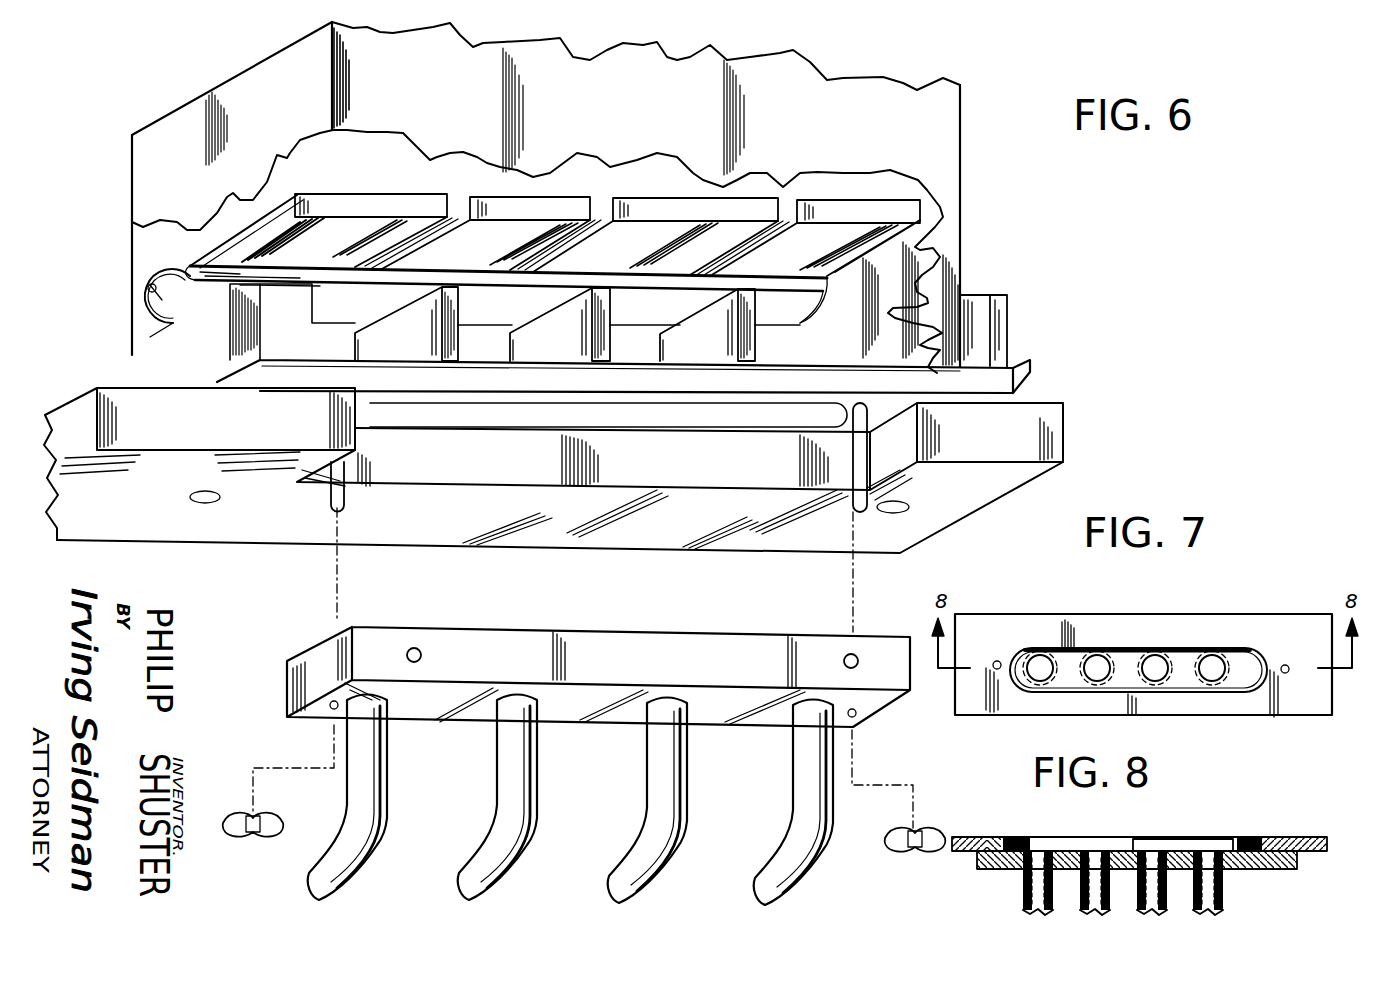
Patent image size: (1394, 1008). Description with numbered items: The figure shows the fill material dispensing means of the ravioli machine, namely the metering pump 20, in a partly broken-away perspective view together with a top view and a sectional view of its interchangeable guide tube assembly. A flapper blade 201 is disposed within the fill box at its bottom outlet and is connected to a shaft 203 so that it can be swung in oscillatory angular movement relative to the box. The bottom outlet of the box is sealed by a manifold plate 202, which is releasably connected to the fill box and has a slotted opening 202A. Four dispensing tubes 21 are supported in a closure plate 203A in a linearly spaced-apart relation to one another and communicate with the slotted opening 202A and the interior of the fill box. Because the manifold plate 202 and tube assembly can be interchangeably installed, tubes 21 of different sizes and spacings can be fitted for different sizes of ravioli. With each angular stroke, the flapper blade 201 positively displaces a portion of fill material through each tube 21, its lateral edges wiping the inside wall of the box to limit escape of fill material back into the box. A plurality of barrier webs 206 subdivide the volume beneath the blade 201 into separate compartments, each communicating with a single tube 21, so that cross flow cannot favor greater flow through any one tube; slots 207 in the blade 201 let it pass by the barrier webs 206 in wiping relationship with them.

In FIG. 6, the metering pump 20 is at (578, 150).
In FIG. 6, the dispensing tubes 21 is at (366, 828).
In FIG. 7, the dispensing tubes 21 is at (1043, 640).
In FIG. 8, the dispensing tubes 21 is at (1023, 880).
In FIG. 6, the flapper blade 201 is at (863, 207).
In FIG. 6, the manifold plate 202 is at (1015, 368).
In FIG. 7, the manifold plate 202 is at (1262, 708).
In FIG. 8, the manifold plate 202 is at (1300, 840).
In FIG. 8, the slotted opening 202A is at (1175, 848).
In FIG. 6, the shaft 203 is at (147, 286).
In FIG. 8, the closure plate 203A is at (1290, 870).
In FIG. 6, the barrier webs 206 is at (456, 334).
In FIG. 6, the slots 207 is at (452, 212).